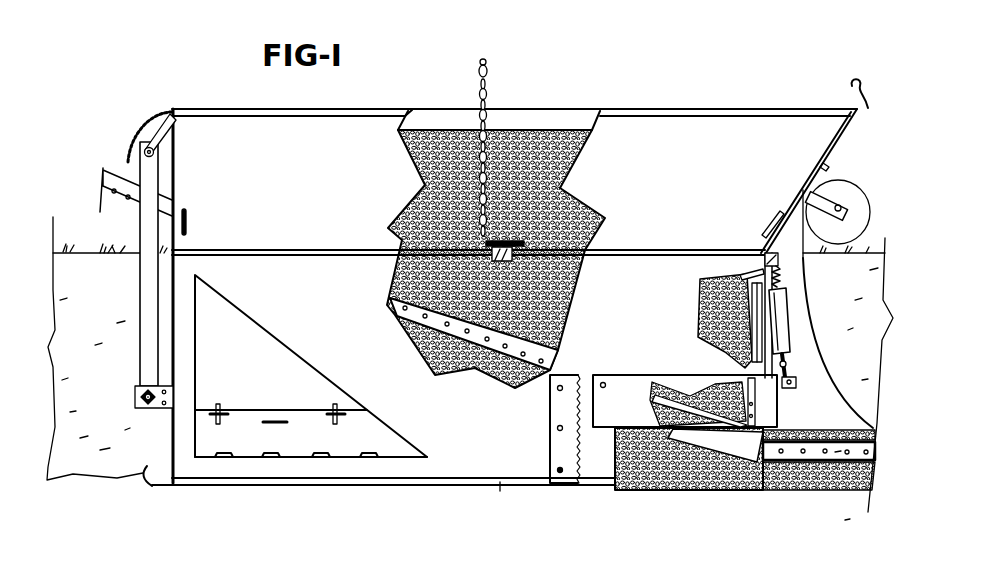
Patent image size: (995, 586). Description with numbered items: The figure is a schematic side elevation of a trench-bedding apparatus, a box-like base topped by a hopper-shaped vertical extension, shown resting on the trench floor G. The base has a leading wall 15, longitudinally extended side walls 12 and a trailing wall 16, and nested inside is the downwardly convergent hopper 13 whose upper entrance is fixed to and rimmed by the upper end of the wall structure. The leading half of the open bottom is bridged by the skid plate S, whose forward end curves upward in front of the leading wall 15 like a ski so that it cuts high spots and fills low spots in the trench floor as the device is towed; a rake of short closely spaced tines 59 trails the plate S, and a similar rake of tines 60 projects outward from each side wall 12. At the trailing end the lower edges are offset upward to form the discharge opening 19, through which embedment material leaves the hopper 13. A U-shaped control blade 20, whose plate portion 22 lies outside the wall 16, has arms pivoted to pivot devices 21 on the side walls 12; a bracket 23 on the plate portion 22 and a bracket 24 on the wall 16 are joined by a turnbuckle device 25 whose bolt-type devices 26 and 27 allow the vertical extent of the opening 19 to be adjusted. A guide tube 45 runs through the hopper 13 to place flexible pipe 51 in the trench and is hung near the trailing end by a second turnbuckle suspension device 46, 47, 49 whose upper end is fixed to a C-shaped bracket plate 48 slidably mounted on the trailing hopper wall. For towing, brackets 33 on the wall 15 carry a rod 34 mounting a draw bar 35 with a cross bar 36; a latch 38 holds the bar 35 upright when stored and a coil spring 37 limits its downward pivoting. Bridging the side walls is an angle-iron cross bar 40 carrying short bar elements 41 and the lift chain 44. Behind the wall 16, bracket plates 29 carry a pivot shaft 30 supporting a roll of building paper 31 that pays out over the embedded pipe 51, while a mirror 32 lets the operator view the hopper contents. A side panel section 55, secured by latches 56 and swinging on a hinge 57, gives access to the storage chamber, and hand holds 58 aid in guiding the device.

The side walls 12 is at (328, 307).
The hopper 13 is at (341, 202).
The leading wall 15 is at (172, 272).
The trailing wall 16 is at (762, 258).
The cut-out discharge opening 19 is at (613, 458).
The control blade 20 is at (640, 405).
The pivot devices 21 is at (603, 384).
The plate portion 22 is at (827, 404).
The bracket 23 is at (798, 383).
The bracket 24 is at (781, 283).
The turnbuckle type device 25 is at (792, 326).
The bolt-type device 26 is at (792, 357).
The bolt-type device 27 is at (788, 305).
The bracket plates 29 is at (807, 187).
The pivot shaft 30 is at (840, 207).
The roll of protective building paper 31 is at (866, 215).
The mirror 32 is at (875, 90).
The brackets 33 is at (142, 396).
The rod 34 is at (148, 396).
The draw bar 35 is at (147, 313).
The cross bar 36 is at (153, 153).
The coil spring 37 is at (128, 150).
The latch 38 is at (160, 130).
The cross bar 40 is at (577, 269).
The bar elements 41 is at (583, 203).
The lift chain 44 is at (489, 96).
The guide tube 45 is at (168, 208).
The second turnbuckle suspension device 46 is at (758, 418).
The second turnbuckle suspension device 47 is at (713, 302).
The C-shaped bracket plate 48 is at (759, 275).
The second turnbuckle suspension device 49 is at (750, 326).
The flexible pipe 51 is at (842, 485).
The panel section 55 is at (314, 443).
The releasable latches 56 is at (218, 408).
The hinge 57 is at (373, 453).
The hand holds 58 is at (188, 233).
The tines 59 is at (500, 489).
The tines 60 is at (573, 412).
The ground G is at (87, 252).
The skid plate S is at (265, 488).